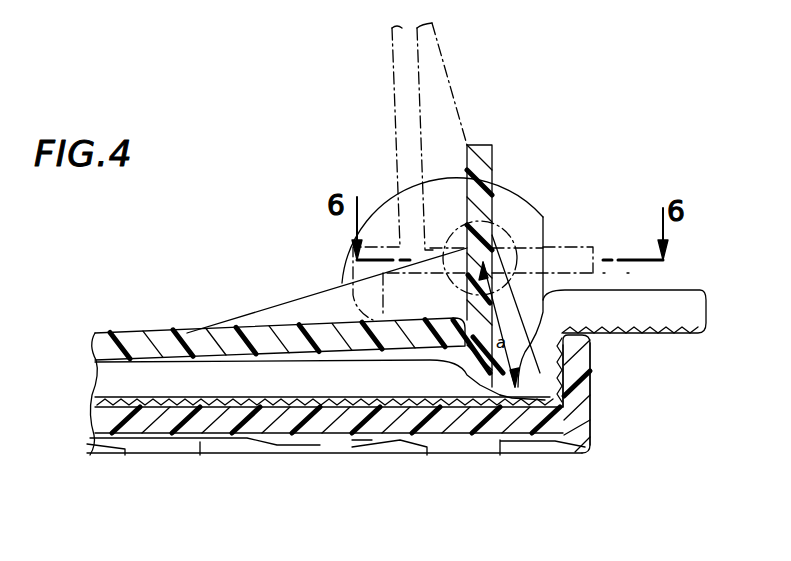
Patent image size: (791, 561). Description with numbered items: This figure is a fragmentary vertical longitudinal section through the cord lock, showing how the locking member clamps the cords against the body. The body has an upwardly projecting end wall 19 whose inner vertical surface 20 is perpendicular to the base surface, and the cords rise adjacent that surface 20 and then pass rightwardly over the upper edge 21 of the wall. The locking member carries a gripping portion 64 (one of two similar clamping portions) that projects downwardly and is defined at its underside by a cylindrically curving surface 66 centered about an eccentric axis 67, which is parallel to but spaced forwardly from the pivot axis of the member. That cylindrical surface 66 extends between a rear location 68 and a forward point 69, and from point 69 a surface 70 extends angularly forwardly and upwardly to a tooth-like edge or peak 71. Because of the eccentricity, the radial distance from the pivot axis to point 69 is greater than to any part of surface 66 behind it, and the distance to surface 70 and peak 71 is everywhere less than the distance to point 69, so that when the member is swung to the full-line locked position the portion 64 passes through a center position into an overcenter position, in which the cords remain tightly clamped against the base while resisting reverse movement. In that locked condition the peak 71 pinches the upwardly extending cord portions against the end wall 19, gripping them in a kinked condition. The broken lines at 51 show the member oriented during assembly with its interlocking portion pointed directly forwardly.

The upper edge 21 is at (560, 335).
The end wall 19 is at (583, 360).
The inner vertical surface 20 is at (583, 375).
The tooth-like edge or peak 71 is at (582, 412).
The surface 70 is at (578, 448).
The eccentric axis 67 is at (541, 222).
The broken line position of locking member portion 51 is at (572, 246).
The location on cylindrical surface 68 is at (455, 372).
The cylindrically curving surface 66 is at (478, 380).
The gripping portion 64 is at (495, 395).
The point of greatest radial distance 69 is at (512, 400).